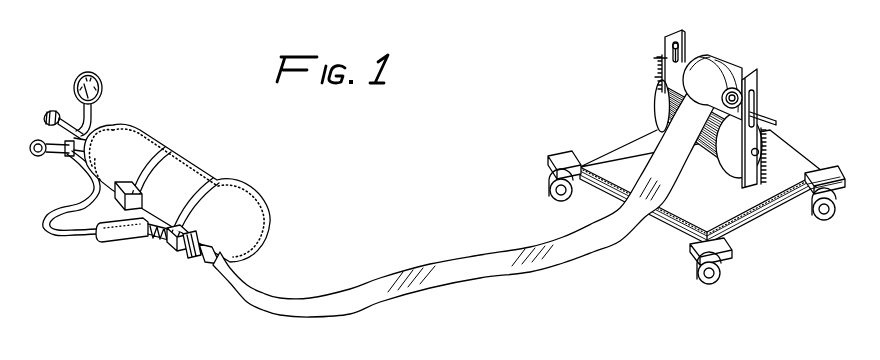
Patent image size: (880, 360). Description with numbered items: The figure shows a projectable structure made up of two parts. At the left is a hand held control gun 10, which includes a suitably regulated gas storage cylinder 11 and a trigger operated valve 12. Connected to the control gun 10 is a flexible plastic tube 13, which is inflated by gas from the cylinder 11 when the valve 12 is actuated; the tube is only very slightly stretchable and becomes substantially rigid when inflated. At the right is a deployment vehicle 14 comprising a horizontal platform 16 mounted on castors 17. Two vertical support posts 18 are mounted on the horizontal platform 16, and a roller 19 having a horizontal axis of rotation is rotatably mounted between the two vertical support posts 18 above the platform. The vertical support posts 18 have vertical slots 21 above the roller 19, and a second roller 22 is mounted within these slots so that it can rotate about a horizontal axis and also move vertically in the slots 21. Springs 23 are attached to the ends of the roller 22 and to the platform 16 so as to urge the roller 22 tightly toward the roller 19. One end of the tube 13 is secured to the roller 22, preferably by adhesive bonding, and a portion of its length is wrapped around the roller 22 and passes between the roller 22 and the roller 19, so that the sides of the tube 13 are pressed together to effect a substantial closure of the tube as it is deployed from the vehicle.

The hand held control gun 10 is at (257, 198).
The gas storage cylinder 11 is at (132, 129).
The trigger operated valve 12 is at (167, 246).
The flexible plastic tube 13 is at (362, 290).
The deployment vehicle 14 is at (611, 138).
The horizontal platform 16 is at (741, 212).
The castors 17 is at (726, 280).
The vertical support posts 18 is at (683, 29).
The roller 19 is at (715, 156).
The vertical slots 21 is at (667, 43).
The second roller 22 is at (681, 57).
The springs 23 is at (663, 78).